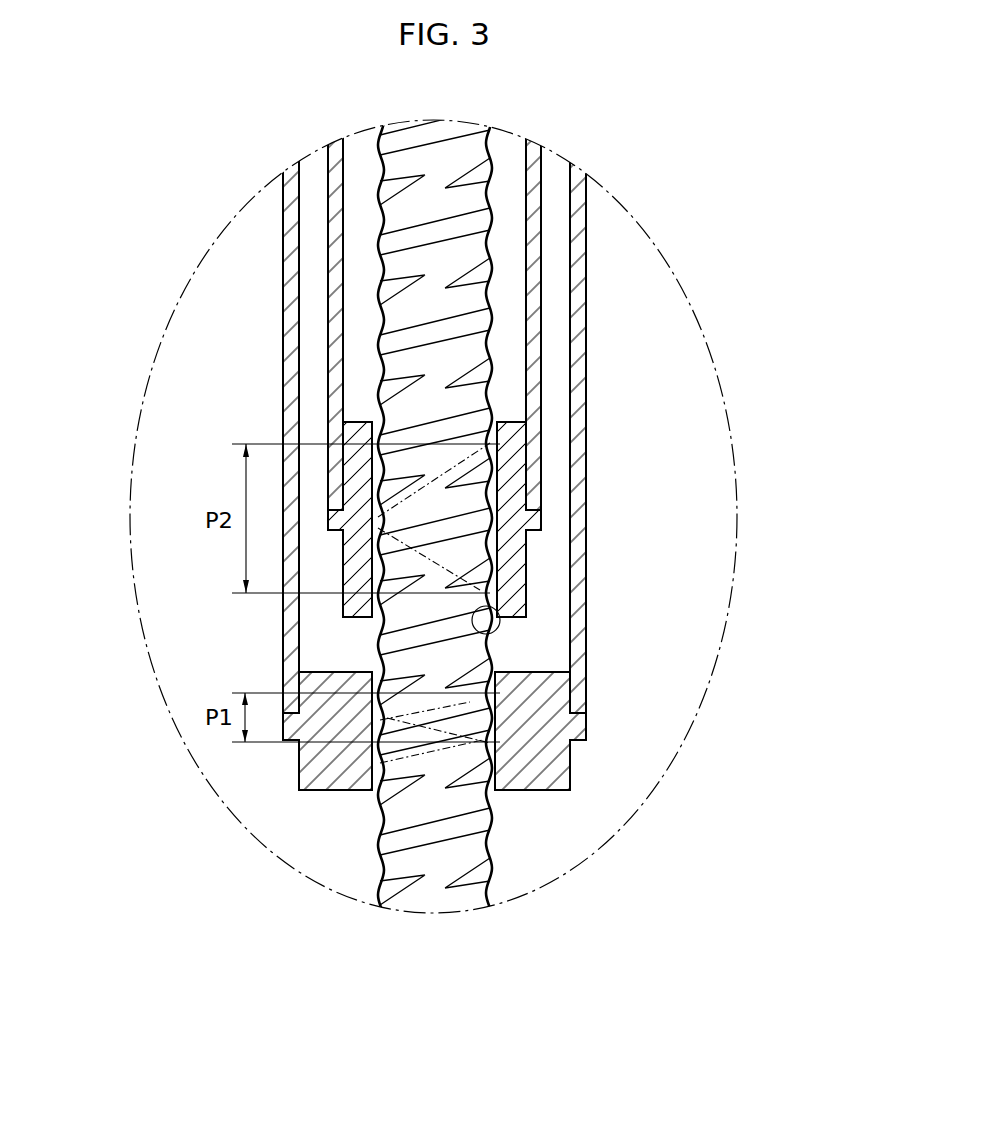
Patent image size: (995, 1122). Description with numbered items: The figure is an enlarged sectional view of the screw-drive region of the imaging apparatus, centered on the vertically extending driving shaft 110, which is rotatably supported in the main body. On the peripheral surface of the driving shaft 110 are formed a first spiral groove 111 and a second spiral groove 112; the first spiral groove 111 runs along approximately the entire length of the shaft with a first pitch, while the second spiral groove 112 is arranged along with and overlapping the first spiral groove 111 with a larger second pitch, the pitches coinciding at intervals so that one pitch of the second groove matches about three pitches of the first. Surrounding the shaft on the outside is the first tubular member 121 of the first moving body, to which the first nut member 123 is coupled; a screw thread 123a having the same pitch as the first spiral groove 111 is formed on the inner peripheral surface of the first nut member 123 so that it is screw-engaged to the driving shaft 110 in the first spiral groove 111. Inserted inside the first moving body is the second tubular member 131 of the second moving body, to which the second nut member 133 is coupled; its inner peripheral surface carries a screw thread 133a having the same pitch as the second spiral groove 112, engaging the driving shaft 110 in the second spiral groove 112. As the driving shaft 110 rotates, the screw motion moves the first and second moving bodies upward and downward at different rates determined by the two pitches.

The driving shaft 110 is at (508, 308).
The first spiral groove 111 is at (438, 255).
The second spiral groove 112 is at (438, 283).
The first tubular member 121 is at (577, 623).
The first nut member 123 is at (558, 765).
The screw thread 123a is at (493, 697).
The second tubular member 131 is at (533, 433).
The second nut member 133 is at (515, 488).
The screw thread 133a is at (483, 636).